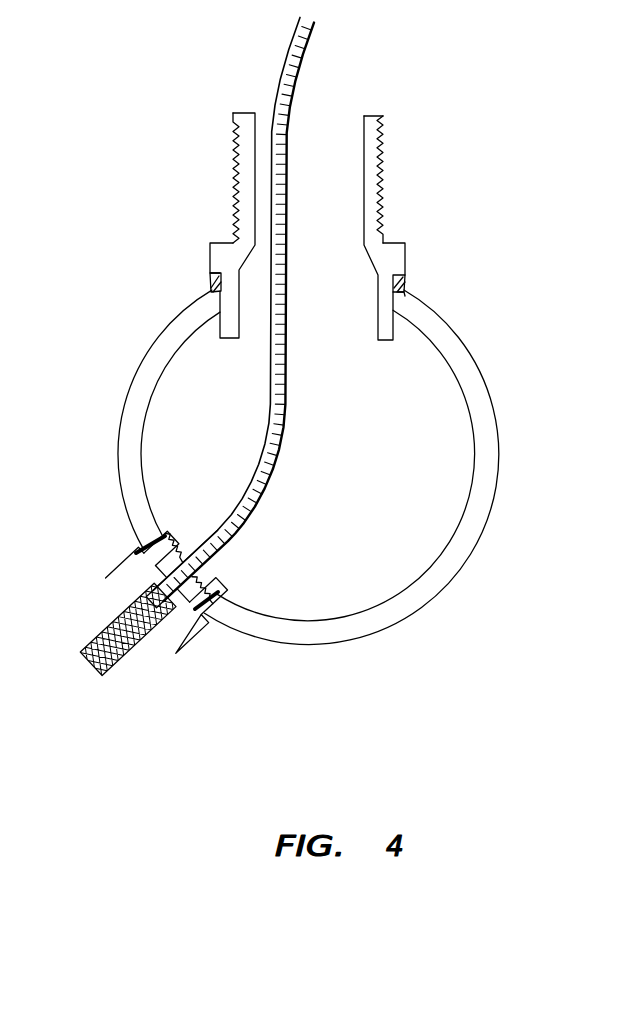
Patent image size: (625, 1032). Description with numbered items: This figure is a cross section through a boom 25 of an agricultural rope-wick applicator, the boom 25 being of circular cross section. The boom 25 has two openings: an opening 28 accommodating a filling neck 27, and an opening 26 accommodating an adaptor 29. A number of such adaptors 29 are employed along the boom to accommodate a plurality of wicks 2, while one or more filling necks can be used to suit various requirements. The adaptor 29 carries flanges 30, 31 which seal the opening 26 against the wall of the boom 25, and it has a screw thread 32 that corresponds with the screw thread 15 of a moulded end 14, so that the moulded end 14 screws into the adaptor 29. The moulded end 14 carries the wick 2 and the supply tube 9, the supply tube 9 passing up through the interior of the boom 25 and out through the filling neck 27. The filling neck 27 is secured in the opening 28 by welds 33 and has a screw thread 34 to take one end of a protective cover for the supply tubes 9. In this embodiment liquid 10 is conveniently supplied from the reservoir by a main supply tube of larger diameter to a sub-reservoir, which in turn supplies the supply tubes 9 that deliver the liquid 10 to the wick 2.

The wick 2 is at (122, 660).
The supply tube 9 is at (288, 407).
The liquid 10 is at (138, 588).
The moulded end 14 is at (187, 645).
The screw thread 15 is at (226, 582).
The boom 25 is at (493, 402).
The opening 26 is at (150, 549).
The filling neck 27 is at (405, 245).
The opening 28 is at (400, 298).
The adaptor 29 is at (238, 584).
The flange 30 is at (172, 537).
The flange 31 is at (207, 617).
The screw thread 32 is at (188, 542).
The welds 33 is at (210, 282).
The screw thread 34 is at (383, 172).